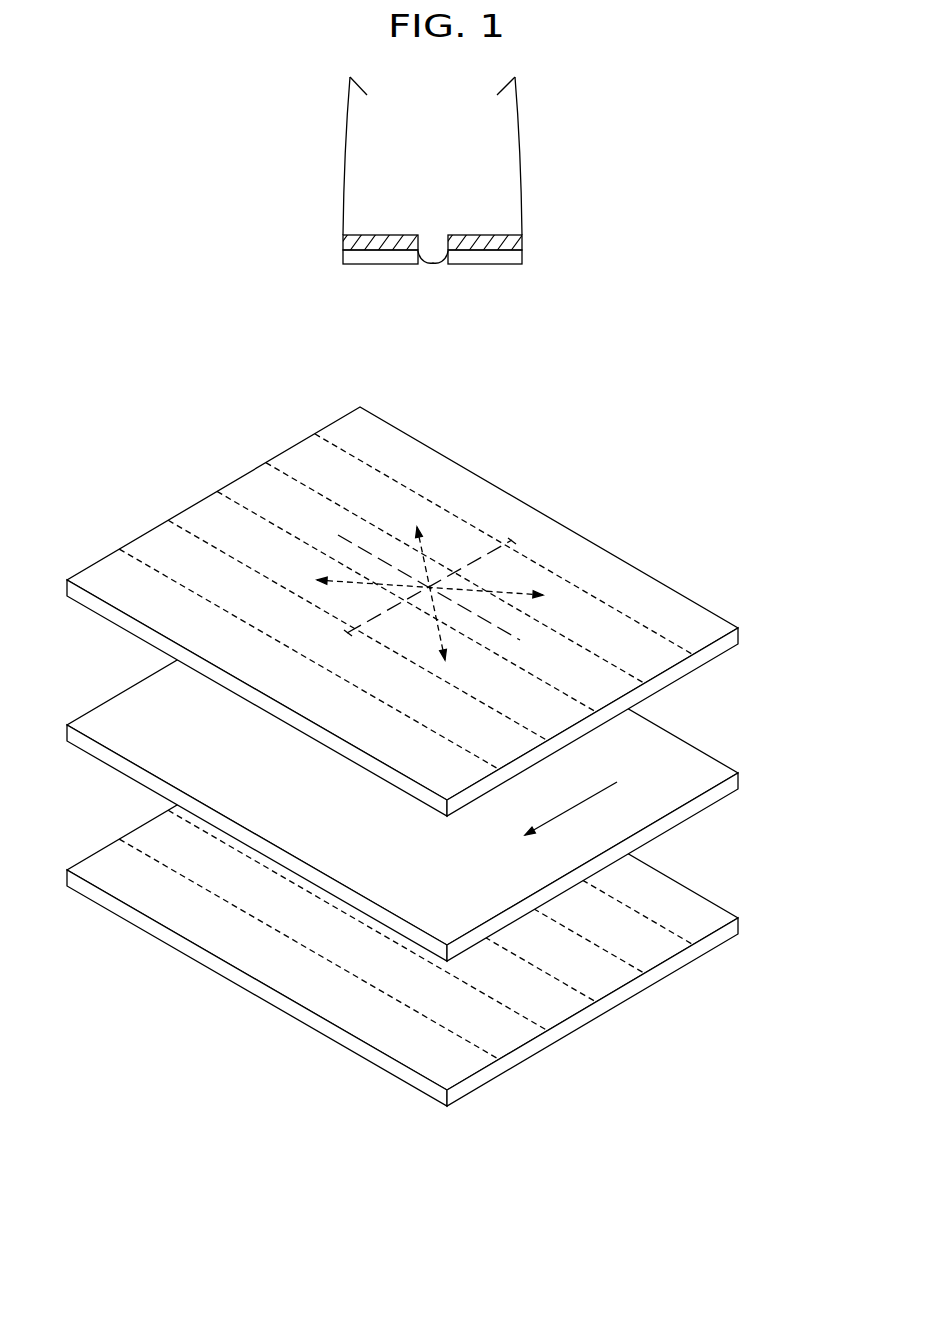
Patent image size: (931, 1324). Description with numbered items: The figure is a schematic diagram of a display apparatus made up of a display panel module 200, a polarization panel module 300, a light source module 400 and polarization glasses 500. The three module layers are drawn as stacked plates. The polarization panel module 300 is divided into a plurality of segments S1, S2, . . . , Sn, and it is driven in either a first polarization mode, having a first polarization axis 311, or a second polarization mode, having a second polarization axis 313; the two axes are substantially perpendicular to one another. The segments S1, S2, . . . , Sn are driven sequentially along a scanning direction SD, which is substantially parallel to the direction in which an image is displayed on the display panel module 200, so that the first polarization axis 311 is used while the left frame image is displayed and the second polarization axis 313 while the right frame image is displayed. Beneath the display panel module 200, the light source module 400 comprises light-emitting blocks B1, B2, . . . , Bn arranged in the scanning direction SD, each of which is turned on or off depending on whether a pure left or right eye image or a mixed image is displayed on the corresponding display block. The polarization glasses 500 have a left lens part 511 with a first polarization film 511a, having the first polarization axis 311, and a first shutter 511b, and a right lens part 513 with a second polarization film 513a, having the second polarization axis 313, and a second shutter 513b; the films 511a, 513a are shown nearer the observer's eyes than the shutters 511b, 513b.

The polarization glasses 500 is at (522, 127).
The left lens part 511 is at (546, 251).
The first polarization film 511a is at (522, 243).
The first shutter 511b is at (522, 260).
The right lens part 513 is at (329, 252).
The second polarization film 513a is at (343, 243).
The second shutter 513b is at (343, 261).
The polarization panel module 300 is at (420, 617).
The first polarization axis 311 is at (503, 592).
The second polarization axis 313 is at (422, 555).
The display panel module 200 is at (730, 762).
The light source module 400 is at (422, 910).
The segment S1 is at (708, 632).
The segment S2 is at (663, 663).
The segment Sn is at (452, 780).
The scanning direction SD is at (612, 785).
The light-emitting block B1 is at (708, 925).
The light-emitting block B2 is at (663, 957).
The light-emitting block Bn is at (452, 1073).